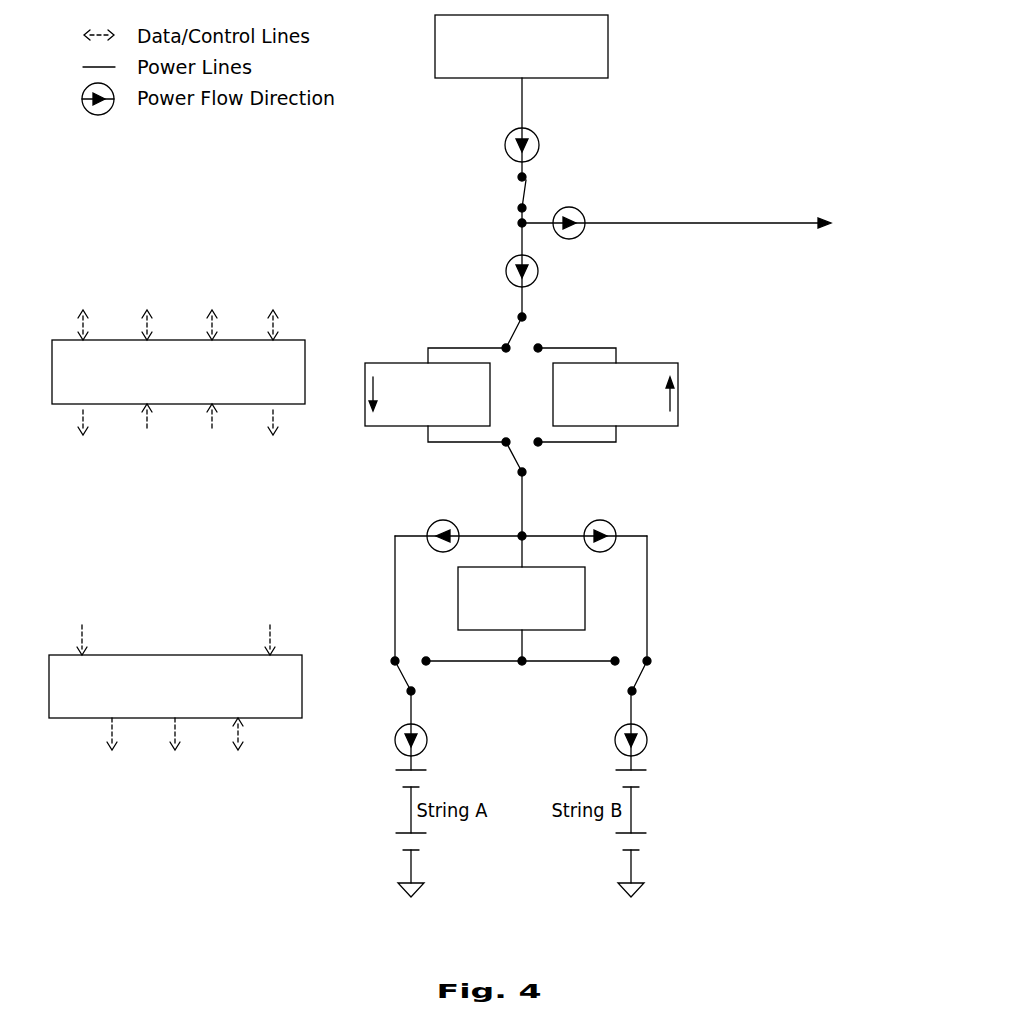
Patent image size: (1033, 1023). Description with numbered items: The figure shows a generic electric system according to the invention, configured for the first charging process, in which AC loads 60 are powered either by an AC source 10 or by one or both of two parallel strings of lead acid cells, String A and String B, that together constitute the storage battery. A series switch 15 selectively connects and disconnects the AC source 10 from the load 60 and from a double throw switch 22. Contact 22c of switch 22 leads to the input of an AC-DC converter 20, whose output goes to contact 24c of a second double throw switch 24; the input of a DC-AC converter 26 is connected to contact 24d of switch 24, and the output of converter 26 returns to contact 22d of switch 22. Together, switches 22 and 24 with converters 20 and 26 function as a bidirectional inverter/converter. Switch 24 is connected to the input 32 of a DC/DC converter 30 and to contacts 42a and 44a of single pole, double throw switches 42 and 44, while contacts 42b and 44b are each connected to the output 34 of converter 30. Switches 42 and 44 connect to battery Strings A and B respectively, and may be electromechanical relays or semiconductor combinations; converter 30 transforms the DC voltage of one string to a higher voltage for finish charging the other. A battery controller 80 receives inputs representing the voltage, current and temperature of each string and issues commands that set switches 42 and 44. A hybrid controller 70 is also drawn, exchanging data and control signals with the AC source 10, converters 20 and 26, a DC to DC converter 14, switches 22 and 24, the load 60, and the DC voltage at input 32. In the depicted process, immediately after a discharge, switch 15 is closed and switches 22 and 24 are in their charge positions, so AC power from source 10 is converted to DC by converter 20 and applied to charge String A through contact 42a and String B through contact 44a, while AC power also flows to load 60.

The AC source 10 is at (521, 46).
The DC to DC converter 14 is at (273, 263).
The series switch 15 is at (503, 192).
The AC-DC converter 20 is at (427, 394).
The double throw switch 22 is at (535, 325).
The contact of switch 22 22c is at (469, 342).
The contact of switch 22 22d is at (575, 342).
The double throw switch 24 is at (507, 462).
The contact of switch 24 24c is at (469, 447).
The contact of switch 24 24d is at (575, 447).
The DC-AC converter 26 is at (615, 394).
The DC/DC converter 30 is at (521, 598).
The input of DC/DC converter 32 is at (521, 533).
The output of DC/DC converter 34 is at (520, 649).
The single pole, double throw switch 42 is at (399, 689).
The contact of switch 42 42a is at (372, 600).
The contact of switch 42 42b is at (448, 672).
The single pole, double throw switch 44 is at (644, 689).
The contact of switch 44 44a is at (667, 600).
The contact of switch 44 44b is at (592, 672).
The AC loads 60 is at (712, 223).
The hybrid controller 70 is at (178, 364).
The battery controller 80 is at (178, 712).